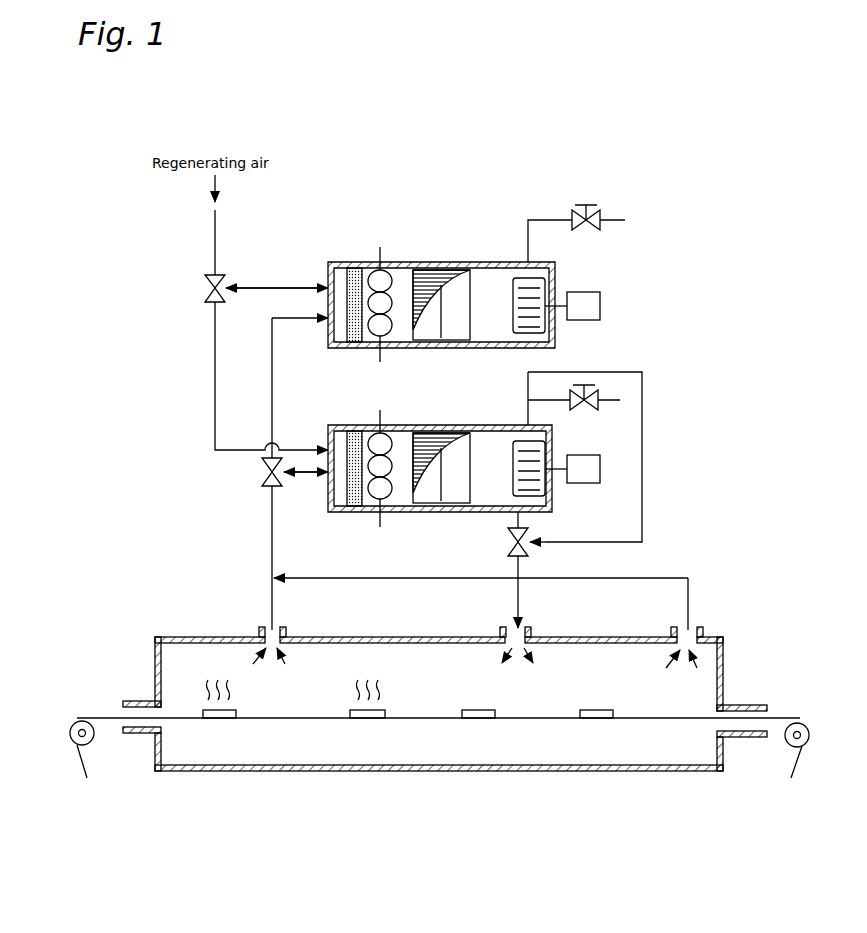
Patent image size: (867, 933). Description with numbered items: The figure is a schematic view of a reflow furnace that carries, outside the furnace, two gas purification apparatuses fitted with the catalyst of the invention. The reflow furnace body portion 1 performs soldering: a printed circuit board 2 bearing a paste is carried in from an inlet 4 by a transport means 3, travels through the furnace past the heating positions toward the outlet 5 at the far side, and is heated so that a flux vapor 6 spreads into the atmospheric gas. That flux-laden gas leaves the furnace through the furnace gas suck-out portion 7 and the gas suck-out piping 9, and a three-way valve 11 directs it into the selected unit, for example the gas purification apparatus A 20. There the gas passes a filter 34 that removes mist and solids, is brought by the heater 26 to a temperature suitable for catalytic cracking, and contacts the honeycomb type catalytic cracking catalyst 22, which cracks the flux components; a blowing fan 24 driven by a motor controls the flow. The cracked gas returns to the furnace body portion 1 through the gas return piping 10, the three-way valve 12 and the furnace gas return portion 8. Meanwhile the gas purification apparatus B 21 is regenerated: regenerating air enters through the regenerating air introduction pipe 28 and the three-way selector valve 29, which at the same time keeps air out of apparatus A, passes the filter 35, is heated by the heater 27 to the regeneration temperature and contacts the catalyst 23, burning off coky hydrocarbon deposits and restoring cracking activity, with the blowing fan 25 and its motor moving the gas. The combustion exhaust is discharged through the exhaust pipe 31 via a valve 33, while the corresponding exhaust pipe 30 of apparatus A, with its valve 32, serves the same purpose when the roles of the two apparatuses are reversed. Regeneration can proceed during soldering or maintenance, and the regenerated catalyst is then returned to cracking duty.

The reflow furnace body portion 1 is at (185, 637).
The printed circuit board 2 is at (597, 785).
The transport means 3 is at (270, 718).
The inlet 4 is at (136, 715).
The web outlet 5 is at (755, 710).
The flux vapor 6 is at (385, 695).
The furnace gas suck-out portion 7 is at (280, 630).
The furnace gas return portion 8 is at (525, 630).
The gas suck-out piping 9 is at (352, 575).
The gas return piping 10 is at (642, 430).
The three-way valve 11 is at (262, 478).
The three-way valve 12 is at (538, 540).
The gas purification apparatus A 20 is at (355, 342).
The gas purification apparatus B 21 is at (382, 512).
The honeycomb type catalytic cracking catalyst 22 is at (440, 270).
The honeycomb type catalytic cracking catalyst 23 is at (440, 433).
The blowing fan 24 is at (540, 290).
The blowing fan 25 is at (540, 455).
The heater 26 is at (388, 280).
The heater 27 is at (388, 445).
The regenerating air introduction pipe 28 is at (213, 243).
The three-way valve 29 is at (222, 282).
The exhaust pipe A 30 is at (540, 218).
The exhaust pipe B 31 is at (528, 396).
The valve 32 is at (600, 205).
The valve 33 is at (598, 392).
The filter 34 is at (353, 268).
The filter 35 is at (355, 431).